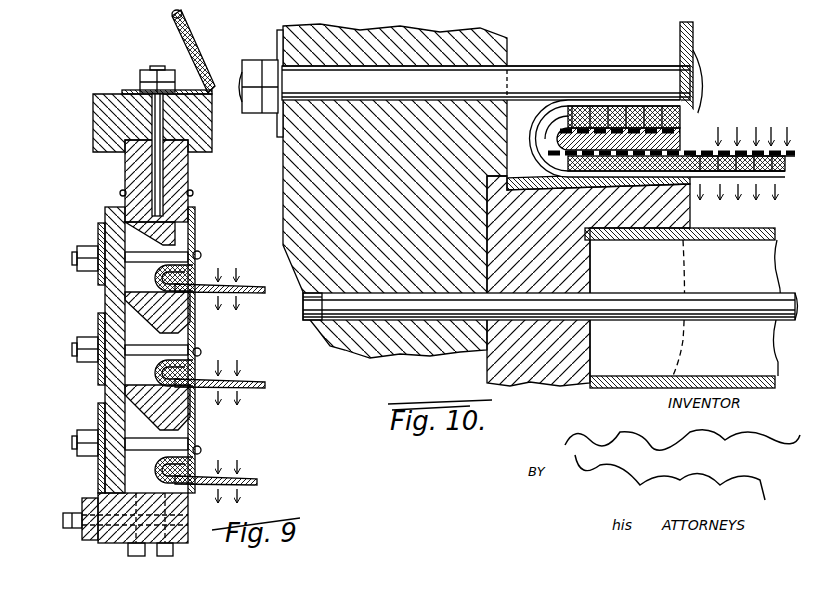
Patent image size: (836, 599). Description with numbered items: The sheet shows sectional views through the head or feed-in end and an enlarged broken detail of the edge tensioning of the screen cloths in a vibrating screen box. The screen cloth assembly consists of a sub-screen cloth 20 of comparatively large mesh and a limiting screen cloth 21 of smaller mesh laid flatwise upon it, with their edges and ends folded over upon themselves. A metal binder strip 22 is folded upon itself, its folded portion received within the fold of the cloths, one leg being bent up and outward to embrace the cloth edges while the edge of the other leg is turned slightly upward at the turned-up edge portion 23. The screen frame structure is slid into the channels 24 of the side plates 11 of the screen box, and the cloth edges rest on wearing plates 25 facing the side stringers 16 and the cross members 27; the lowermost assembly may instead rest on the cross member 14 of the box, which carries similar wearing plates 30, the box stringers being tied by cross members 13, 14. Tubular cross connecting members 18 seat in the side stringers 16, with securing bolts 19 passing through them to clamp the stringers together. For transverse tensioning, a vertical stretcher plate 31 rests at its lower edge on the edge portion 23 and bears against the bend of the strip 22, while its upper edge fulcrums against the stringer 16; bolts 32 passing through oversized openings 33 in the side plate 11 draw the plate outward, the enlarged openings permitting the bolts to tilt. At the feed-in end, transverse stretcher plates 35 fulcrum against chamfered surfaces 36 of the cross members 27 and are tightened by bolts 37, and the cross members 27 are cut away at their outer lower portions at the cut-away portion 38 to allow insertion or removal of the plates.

In FIG. 10, the side plate 11 is at (283, 177).
In FIG. 9, the cross member 13 is at (92, 128).
In FIG. 9, the cross member 14 is at (108, 540).
In FIG. 10, the side stringer 16 is at (588, 355).
In FIG. 10, the cross connecting member 18 is at (735, 234).
In FIG. 10, the securing bolt 19 is at (639, 300).
In FIG. 9, the sub-screen cloth 20 is at (246, 398).
In FIG. 10, the sub-screen cloth 20 is at (747, 198).
In FIG. 9, the limiting screen cloth 21 is at (220, 373).
In FIG. 10, the limiting screen cloth 21 is at (671, 140).
In FIG. 9, the metal binder strip 22 is at (190, 270).
In FIG. 10, the metal binder strip 22 is at (668, 100).
In FIG. 9, the turned-up edge portion 23 is at (221, 366).
In FIG. 10, the turned-up edge portion 23 is at (747, 125).
In FIG. 10, the channel 24 is at (566, 279).
In FIG. 9, the wearing plate 25 is at (108, 294).
In FIG. 9, the cross member 27 is at (123, 178).
In FIG. 9, the wearing plate 30 is at (100, 472).
In FIG. 10, the stretcher plate 31 is at (695, 46).
In FIG. 10, the bolt 32 is at (570, 70).
In FIG. 10, the opening 33 is at (468, 100).
In FIG. 9, the stretcher plate 35 is at (195, 225).
In FIG. 9, the chamfered surface 36 is at (196, 237).
In FIG. 9, the bolt 37 is at (156, 363).
In FIG. 9, the cut-away portion 38 is at (130, 234).